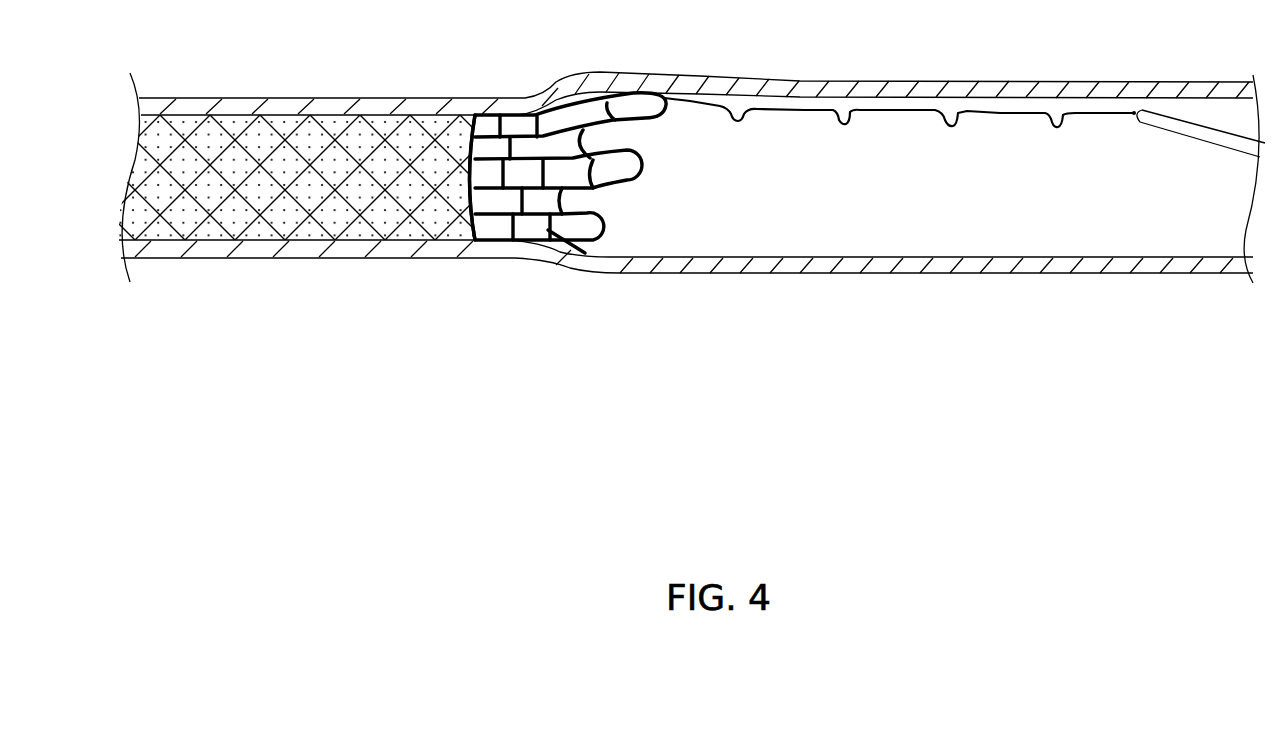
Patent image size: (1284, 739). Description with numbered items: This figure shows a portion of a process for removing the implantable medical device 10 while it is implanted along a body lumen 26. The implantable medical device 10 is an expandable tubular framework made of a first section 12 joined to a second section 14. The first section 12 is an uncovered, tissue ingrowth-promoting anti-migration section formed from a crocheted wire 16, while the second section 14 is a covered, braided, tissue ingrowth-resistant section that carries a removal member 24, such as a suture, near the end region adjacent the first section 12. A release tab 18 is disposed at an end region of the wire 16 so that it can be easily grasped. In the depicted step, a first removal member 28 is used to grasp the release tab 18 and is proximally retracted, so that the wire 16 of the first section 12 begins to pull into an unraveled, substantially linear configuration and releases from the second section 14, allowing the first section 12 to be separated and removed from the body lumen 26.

The implantable medical device 10 is at (612, 199).
The first section 12 is at (493, 114).
The second section 14 is at (143, 134).
The wire 16 is at (897, 110).
The release tab 18 is at (1134, 112).
The removal member 24 is at (444, 203).
The body lumen 26 is at (313, 104).
The first removal member 28 is at (1190, 143).